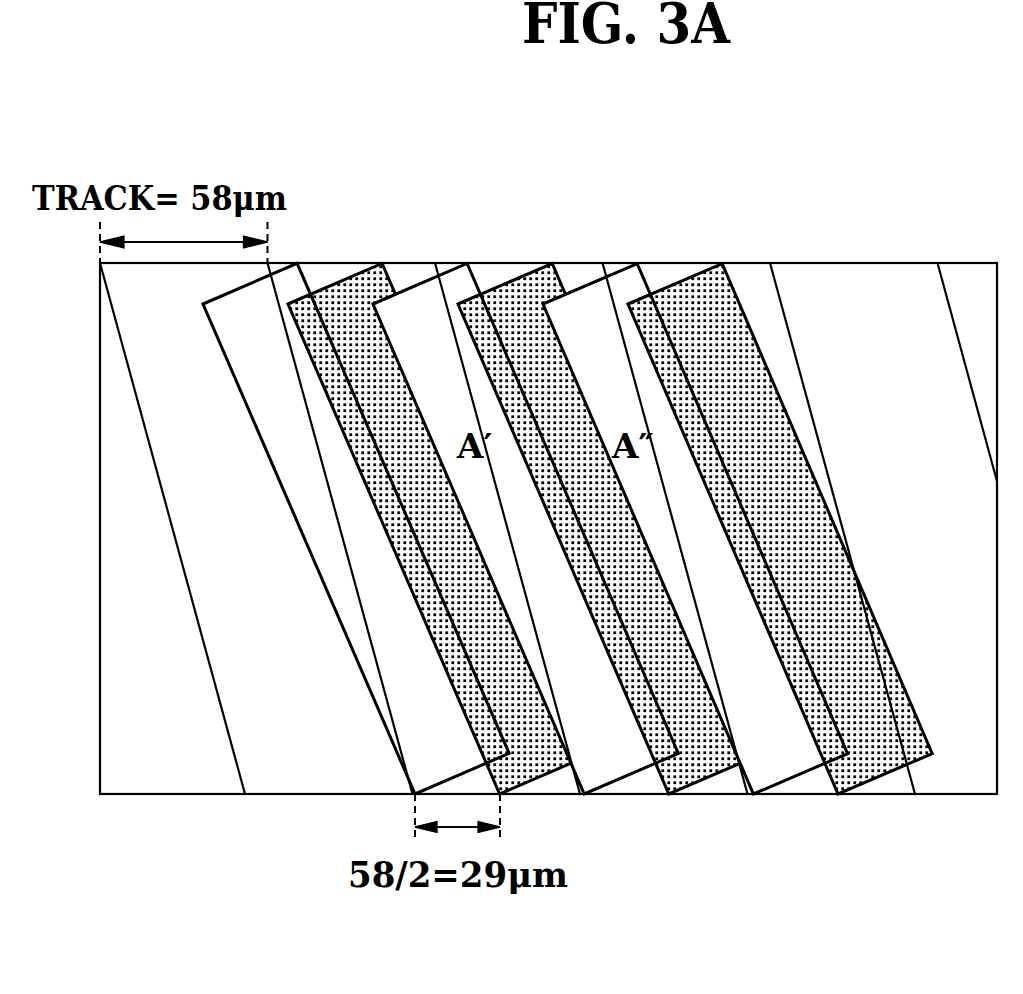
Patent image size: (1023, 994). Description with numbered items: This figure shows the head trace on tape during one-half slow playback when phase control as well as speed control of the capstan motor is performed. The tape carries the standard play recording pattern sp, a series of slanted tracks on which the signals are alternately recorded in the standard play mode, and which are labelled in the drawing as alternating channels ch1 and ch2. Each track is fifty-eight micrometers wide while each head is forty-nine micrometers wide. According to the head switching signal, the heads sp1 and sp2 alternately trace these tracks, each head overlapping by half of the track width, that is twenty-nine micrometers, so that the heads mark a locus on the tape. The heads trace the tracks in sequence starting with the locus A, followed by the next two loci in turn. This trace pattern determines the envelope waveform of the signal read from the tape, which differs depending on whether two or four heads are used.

The standard play (SP) mode recording pattern sp is at (853, 328).
The head sp1 is at (508, 323).
The head sp2 is at (417, 308).
The head trace locus A is at (356, 528).
The channel 1 track ch1 is at (256, 528).
The channel 2 track ch2 is at (601, 528).